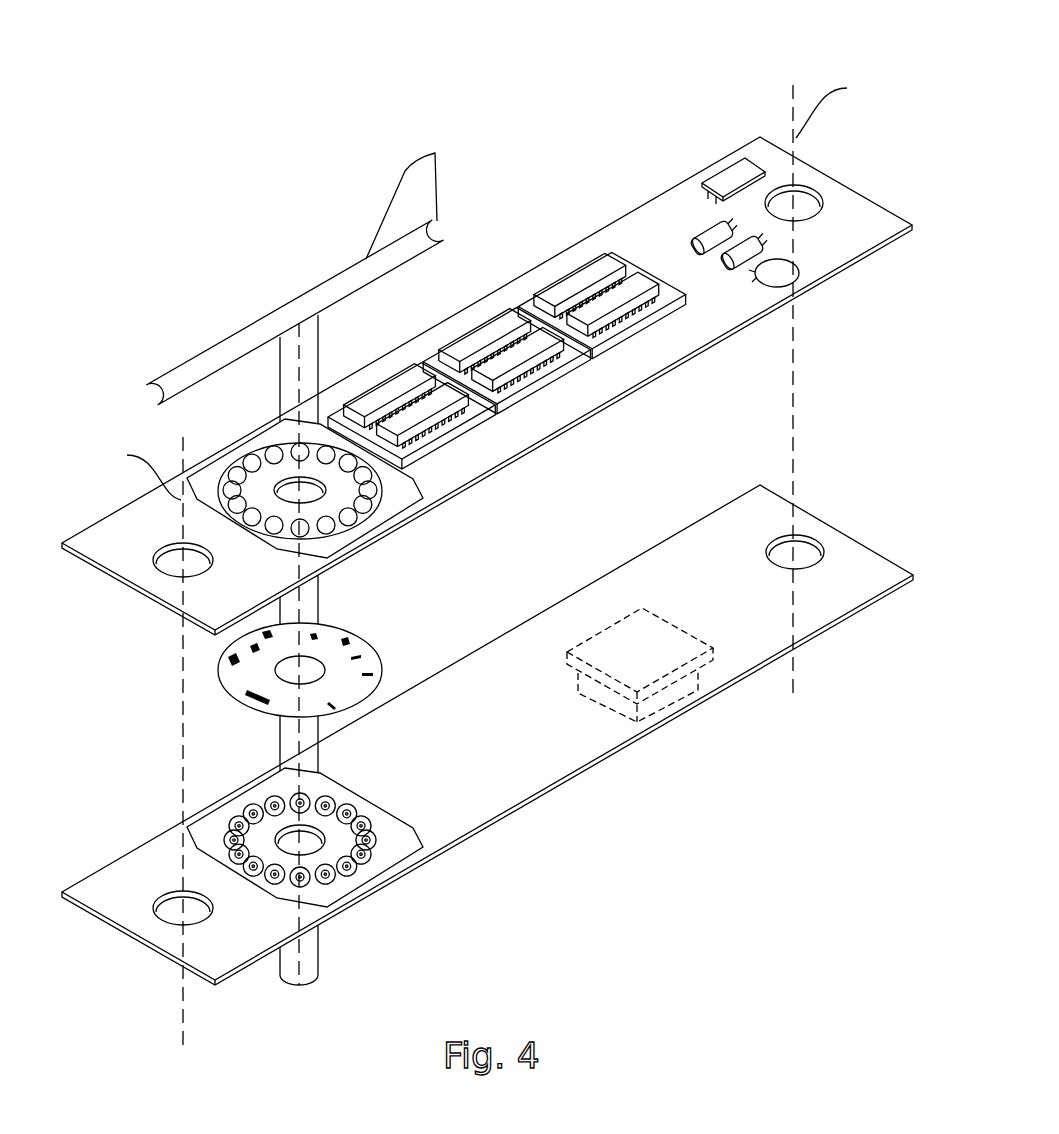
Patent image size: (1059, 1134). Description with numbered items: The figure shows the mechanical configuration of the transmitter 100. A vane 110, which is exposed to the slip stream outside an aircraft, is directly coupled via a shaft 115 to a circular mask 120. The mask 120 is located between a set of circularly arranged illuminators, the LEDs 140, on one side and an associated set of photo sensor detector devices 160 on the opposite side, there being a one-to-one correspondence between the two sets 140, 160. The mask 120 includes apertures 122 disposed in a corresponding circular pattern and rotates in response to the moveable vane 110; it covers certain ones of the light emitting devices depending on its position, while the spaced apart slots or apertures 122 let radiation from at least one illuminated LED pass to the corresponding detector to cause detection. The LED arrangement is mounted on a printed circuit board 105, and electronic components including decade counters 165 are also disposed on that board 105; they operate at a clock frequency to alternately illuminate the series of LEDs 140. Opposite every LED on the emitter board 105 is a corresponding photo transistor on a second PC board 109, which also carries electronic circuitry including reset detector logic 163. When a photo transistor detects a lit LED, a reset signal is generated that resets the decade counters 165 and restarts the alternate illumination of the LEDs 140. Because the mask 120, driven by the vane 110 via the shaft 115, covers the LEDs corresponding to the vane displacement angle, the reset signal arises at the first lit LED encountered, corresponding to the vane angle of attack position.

The transmitter 100 is at (733, 76).
The printed circuit board 105 is at (826, 260).
The second PC board 109 is at (826, 605).
The vane 110 is at (181, 348).
The shaft 115 is at (322, 331).
The circular mask 120 is at (392, 656).
The apertures 122 is at (316, 636).
The LEDs 140 is at (261, 448).
The photo sensor detector devices 160 is at (383, 826).
The reset detector logic 163 is at (641, 642).
The decade counters 165 is at (506, 318).